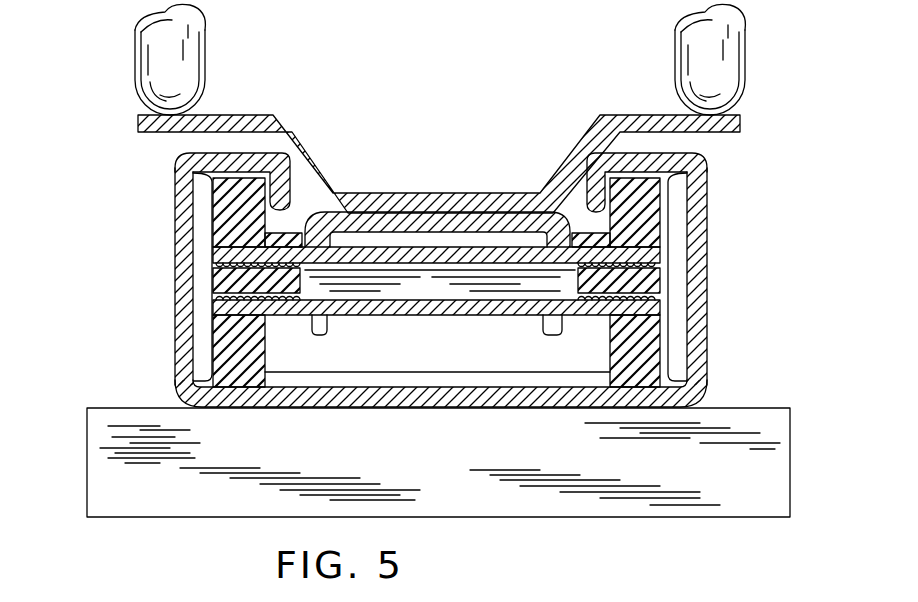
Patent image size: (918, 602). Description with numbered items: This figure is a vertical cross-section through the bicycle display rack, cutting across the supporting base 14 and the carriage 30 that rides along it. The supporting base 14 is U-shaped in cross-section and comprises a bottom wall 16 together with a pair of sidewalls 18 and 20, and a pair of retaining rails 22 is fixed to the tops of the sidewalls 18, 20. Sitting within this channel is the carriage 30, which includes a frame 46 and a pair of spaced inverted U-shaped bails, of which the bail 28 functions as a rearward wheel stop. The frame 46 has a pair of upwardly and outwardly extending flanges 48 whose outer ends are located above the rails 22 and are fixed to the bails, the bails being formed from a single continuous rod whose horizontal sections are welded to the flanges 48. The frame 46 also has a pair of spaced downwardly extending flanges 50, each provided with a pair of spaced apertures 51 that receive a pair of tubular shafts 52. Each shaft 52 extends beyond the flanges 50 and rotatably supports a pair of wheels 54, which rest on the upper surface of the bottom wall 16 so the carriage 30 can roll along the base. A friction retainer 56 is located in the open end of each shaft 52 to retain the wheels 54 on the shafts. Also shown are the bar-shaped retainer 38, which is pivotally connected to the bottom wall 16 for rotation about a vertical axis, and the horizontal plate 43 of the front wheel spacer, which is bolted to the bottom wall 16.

The supporting base 14 is at (152, 337).
The bottom wall 16 is at (275, 400).
The sidewall 18 is at (700, 267).
The sidewall 20 is at (190, 294).
The retaining rail 22 is at (227, 155).
The bail 28 is at (147, 42).
The carriage 30 is at (469, 118).
The retainer 38 is at (775, 422).
The horizontal plate 43 is at (470, 396).
The frame 46 is at (478, 180).
The flange 48 is at (207, 118).
The flange 50 is at (313, 336).
The aperture 51 is at (540, 317).
The tubular shaft 52 is at (637, 243).
The wheel 54 is at (223, 355).
The friction retainer 56 is at (222, 246).